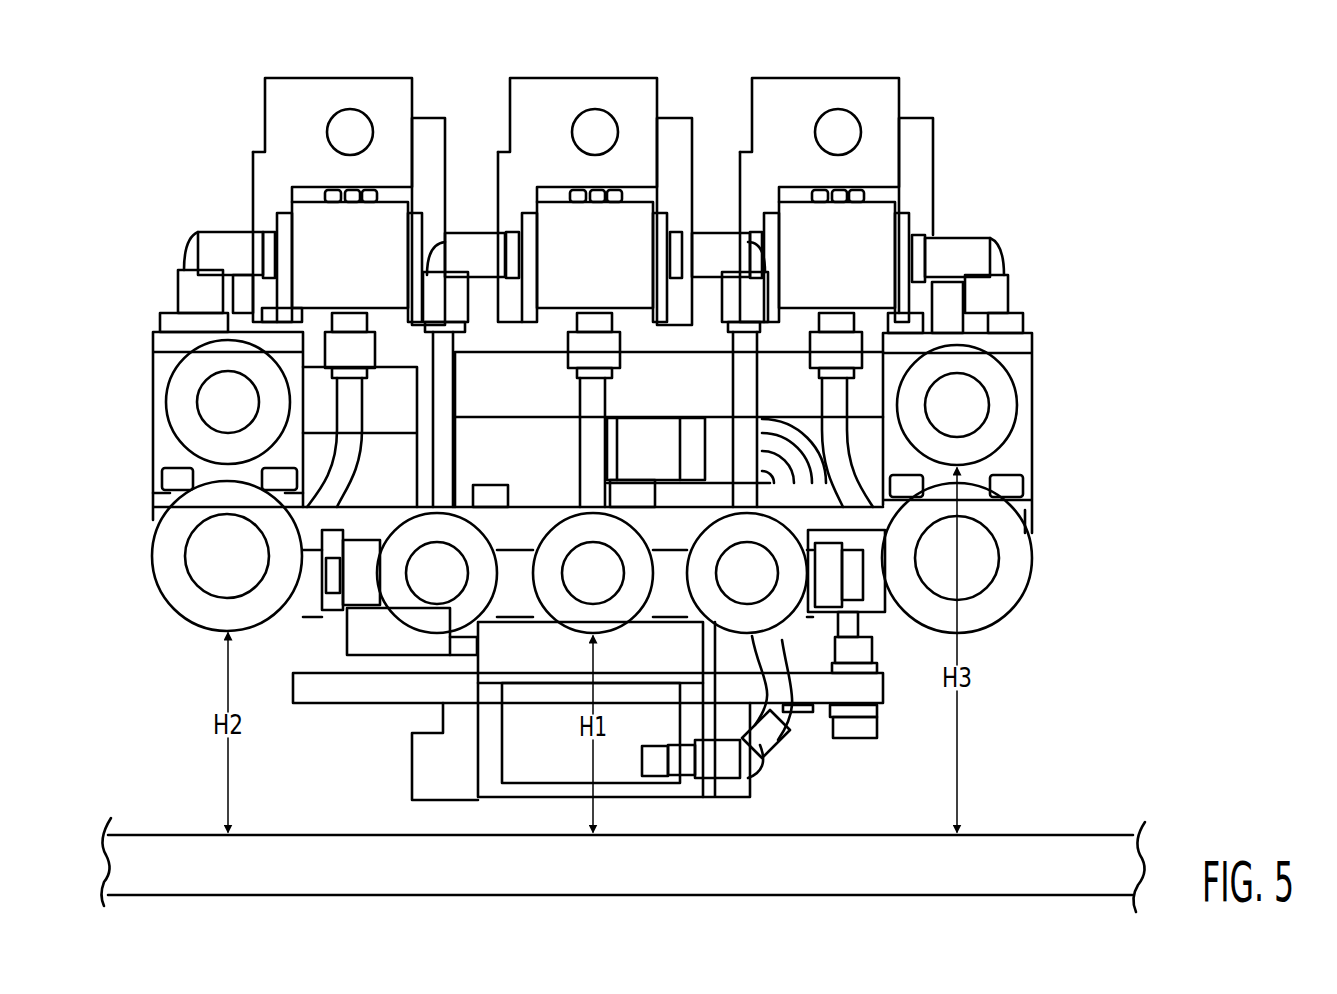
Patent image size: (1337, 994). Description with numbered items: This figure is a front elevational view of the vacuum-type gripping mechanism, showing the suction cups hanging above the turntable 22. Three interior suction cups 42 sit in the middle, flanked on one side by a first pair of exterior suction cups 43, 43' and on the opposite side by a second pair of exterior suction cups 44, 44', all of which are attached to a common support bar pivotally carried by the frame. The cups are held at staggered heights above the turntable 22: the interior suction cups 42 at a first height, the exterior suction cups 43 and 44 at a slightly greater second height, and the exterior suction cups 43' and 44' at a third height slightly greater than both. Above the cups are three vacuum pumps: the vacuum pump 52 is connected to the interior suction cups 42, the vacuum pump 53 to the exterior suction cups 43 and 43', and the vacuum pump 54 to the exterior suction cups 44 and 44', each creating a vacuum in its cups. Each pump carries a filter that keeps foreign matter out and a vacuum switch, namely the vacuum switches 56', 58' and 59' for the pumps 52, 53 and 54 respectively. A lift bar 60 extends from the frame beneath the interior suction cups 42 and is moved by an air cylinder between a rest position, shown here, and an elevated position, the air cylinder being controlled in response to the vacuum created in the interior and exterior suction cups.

The turntable 22 is at (874, 846).
The interior suction cups 42 is at (412, 620).
The exterior suction cup 43 is at (215, 570).
The exterior suction cup 43' is at (195, 426).
The exterior suction cup 44 is at (983, 558).
The exterior suction cup 44' is at (995, 433).
The vacuum pump 52 is at (673, 113).
The vacuum pump 53 is at (427, 113).
The vacuum pump 54 is at (920, 113).
The vacuum switch 56' is at (582, 273).
The vacuum switch 58' is at (291, 282).
The vacuum switch 59' is at (824, 273).
The lift bar 60 is at (673, 802).